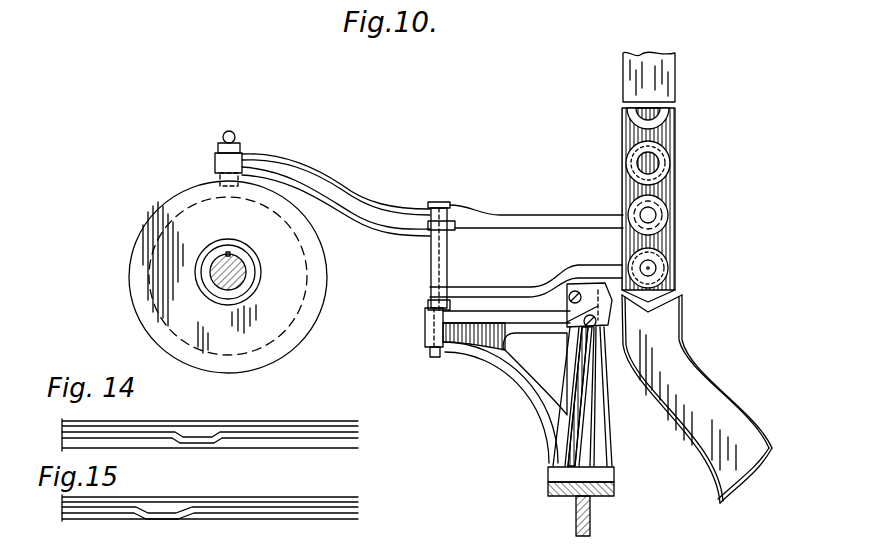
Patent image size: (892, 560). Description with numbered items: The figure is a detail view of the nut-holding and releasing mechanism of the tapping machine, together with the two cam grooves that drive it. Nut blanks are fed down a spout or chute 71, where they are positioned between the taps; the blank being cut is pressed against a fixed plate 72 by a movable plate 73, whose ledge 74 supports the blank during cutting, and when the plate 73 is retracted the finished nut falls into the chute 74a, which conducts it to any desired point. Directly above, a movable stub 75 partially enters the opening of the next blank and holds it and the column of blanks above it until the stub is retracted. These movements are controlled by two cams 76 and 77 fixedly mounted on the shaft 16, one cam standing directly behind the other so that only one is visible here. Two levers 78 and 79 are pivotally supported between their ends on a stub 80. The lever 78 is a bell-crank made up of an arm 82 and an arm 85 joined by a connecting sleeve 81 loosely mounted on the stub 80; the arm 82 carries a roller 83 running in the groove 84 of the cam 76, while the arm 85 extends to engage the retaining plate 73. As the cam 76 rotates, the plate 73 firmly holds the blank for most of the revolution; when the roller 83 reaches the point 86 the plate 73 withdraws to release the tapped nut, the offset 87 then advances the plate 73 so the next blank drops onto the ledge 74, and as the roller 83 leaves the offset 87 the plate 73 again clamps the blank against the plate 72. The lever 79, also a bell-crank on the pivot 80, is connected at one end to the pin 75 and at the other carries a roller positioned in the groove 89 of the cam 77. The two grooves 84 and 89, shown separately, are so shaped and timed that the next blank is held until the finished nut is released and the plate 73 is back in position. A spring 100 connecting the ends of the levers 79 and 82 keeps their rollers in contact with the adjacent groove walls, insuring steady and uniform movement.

In FIG. 10, the shaft 16 is at (213, 268).
In FIG. 10, the spout or chute 71 is at (674, 147).
In FIG. 10, the fixed plate 72 is at (590, 318).
In FIG. 10, the plate 73 is at (668, 306).
In FIG. 10, the ledge 74 is at (668, 298).
In FIG. 10, the chute 74a is at (698, 362).
In FIG. 10, the movable stub 75 is at (678, 211).
In FIG. 10, the cam 76 is at (310, 311).
In FIG. 15, the cam 76 is at (330, 497).
In FIG. 14, the cam 77 is at (333, 423).
In FIG. 10, the lever 78 is at (467, 290).
In FIG. 10, the lever 79 is at (553, 214).
In FIG. 10, the stub 80 is at (436, 342).
In FIG. 10, the connecting sleeve 81 is at (428, 262).
In FIG. 10, the arm 82 is at (346, 212).
In FIG. 10, the roller 83 is at (215, 172).
In FIG. 15, the groove 84 is at (243, 507).
In FIG. 10, the arm 85 is at (522, 287).
In FIG. 15, the point or offset 86 is at (157, 514).
In FIG. 15, the offset 87 is at (190, 514).
In FIG. 14, the groove 89 is at (252, 432).
In FIG. 10, the spring 100 is at (581, 443).